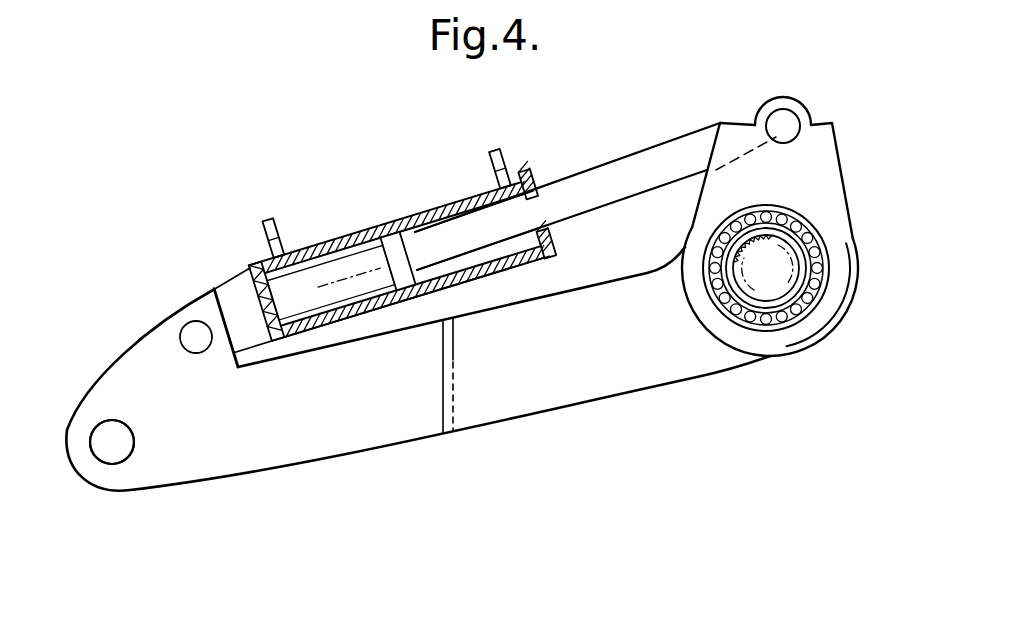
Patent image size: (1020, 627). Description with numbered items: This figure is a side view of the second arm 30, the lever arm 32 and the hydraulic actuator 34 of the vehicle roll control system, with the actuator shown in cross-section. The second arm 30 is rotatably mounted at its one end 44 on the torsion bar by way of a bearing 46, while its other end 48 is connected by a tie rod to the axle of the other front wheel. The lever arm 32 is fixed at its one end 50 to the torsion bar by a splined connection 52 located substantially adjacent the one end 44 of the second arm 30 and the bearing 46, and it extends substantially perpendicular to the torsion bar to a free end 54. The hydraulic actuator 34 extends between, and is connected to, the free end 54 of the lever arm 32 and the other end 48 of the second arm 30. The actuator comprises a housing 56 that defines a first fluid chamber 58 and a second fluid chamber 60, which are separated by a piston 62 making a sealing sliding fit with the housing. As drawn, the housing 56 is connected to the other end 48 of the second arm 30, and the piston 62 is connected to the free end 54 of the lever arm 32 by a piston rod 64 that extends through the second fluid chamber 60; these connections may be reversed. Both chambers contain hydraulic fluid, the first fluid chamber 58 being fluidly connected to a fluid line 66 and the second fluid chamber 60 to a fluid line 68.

The second arm 30 is at (425, 402).
The lever arm 32 is at (818, 168).
The hydraulic actuator 34 is at (530, 153).
The one end of the second arm 44 is at (840, 277).
The bearing 46 is at (822, 253).
The other end of the second arm 48 is at (98, 475).
The one end of the lever arm 50 is at (801, 293).
The splined connection 52 is at (760, 282).
The free end of the lever arm 54 is at (793, 97).
The housing 56 is at (540, 232).
The first fluid chamber 58 is at (350, 272).
The second fluid chamber 60 is at (530, 172).
The piston 62 is at (395, 265).
The piston rod 64 is at (655, 158).
The fluid line 66 is at (278, 228).
The fluid line 68 is at (487, 152).